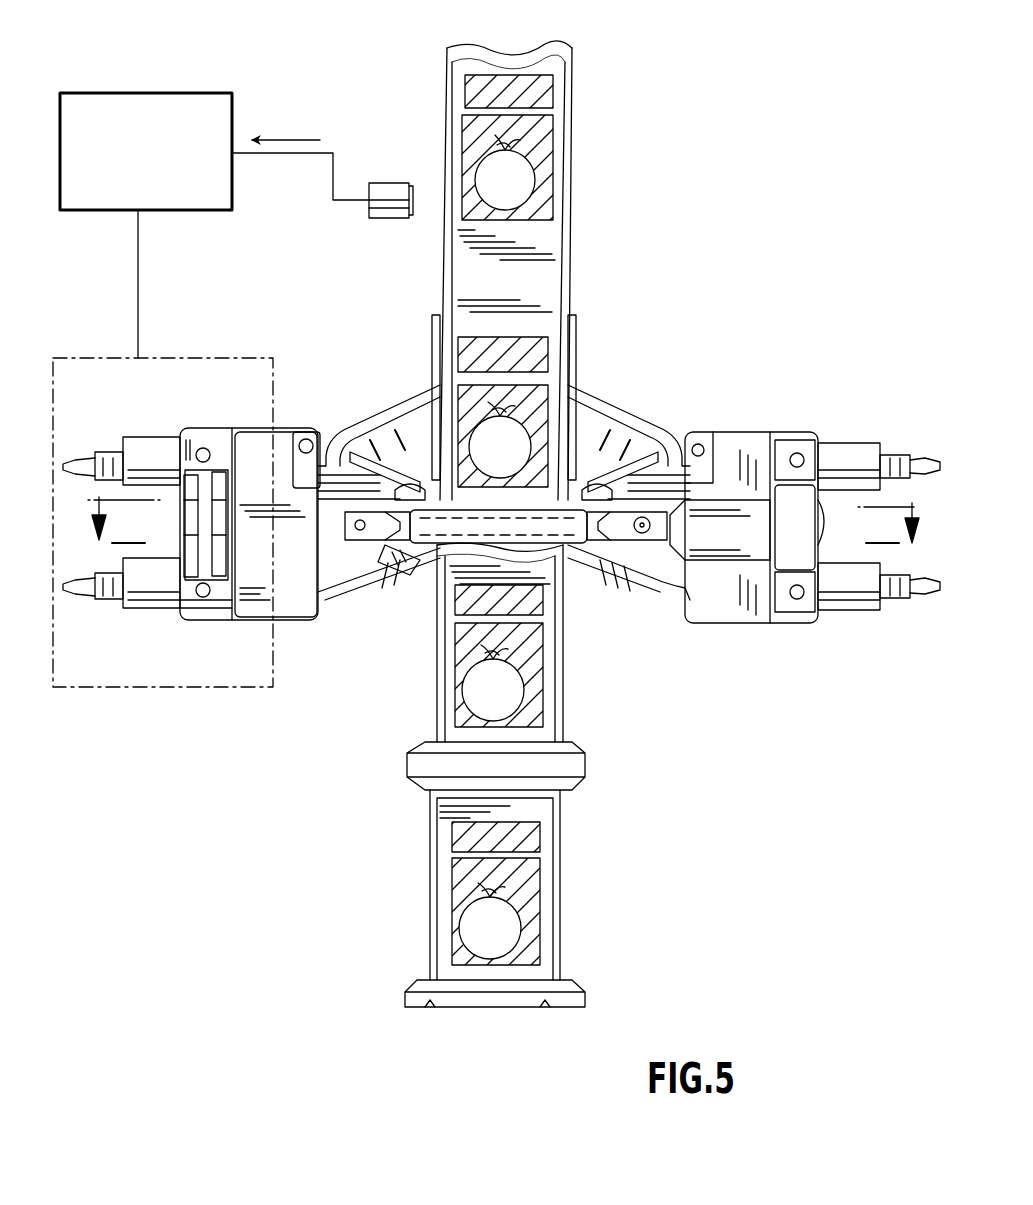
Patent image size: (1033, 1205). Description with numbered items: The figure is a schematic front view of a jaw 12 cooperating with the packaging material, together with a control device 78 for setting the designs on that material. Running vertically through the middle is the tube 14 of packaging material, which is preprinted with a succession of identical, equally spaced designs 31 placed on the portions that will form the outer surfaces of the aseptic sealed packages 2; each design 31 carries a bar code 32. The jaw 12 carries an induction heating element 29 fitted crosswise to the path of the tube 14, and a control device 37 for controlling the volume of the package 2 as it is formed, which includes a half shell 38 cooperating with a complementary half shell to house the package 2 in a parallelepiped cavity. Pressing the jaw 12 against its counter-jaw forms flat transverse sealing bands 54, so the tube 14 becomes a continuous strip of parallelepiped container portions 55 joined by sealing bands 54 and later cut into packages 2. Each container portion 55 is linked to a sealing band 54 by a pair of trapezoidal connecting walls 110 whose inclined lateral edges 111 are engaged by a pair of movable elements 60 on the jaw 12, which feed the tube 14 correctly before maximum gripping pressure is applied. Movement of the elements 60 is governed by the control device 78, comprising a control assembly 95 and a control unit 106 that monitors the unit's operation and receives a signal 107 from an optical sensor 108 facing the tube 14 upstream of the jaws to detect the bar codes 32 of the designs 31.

The aseptic sealed package 2 is at (565, 615).
The jaw 12 is at (748, 430).
The tube of packaging material 14 is at (567, 245).
The induction heating element 29 is at (386, 570).
The design 31 is at (540, 130).
The bar code 32 is at (440, 222).
The control device 37 is at (590, 385).
The half shell 38 is at (435, 335).
The transverse sealing band 54 is at (560, 530).
The container portion 55 is at (448, 650).
The movable element 60 is at (410, 490).
The control device 78 is at (245, 100).
The control assembly 95 is at (198, 378).
The control unit 106 is at (158, 108).
The signal 107 is at (300, 140).
The optical sensor 108 is at (388, 190).
The connecting wall 110 is at (545, 750).
The inclined lateral edge 111 is at (420, 748).